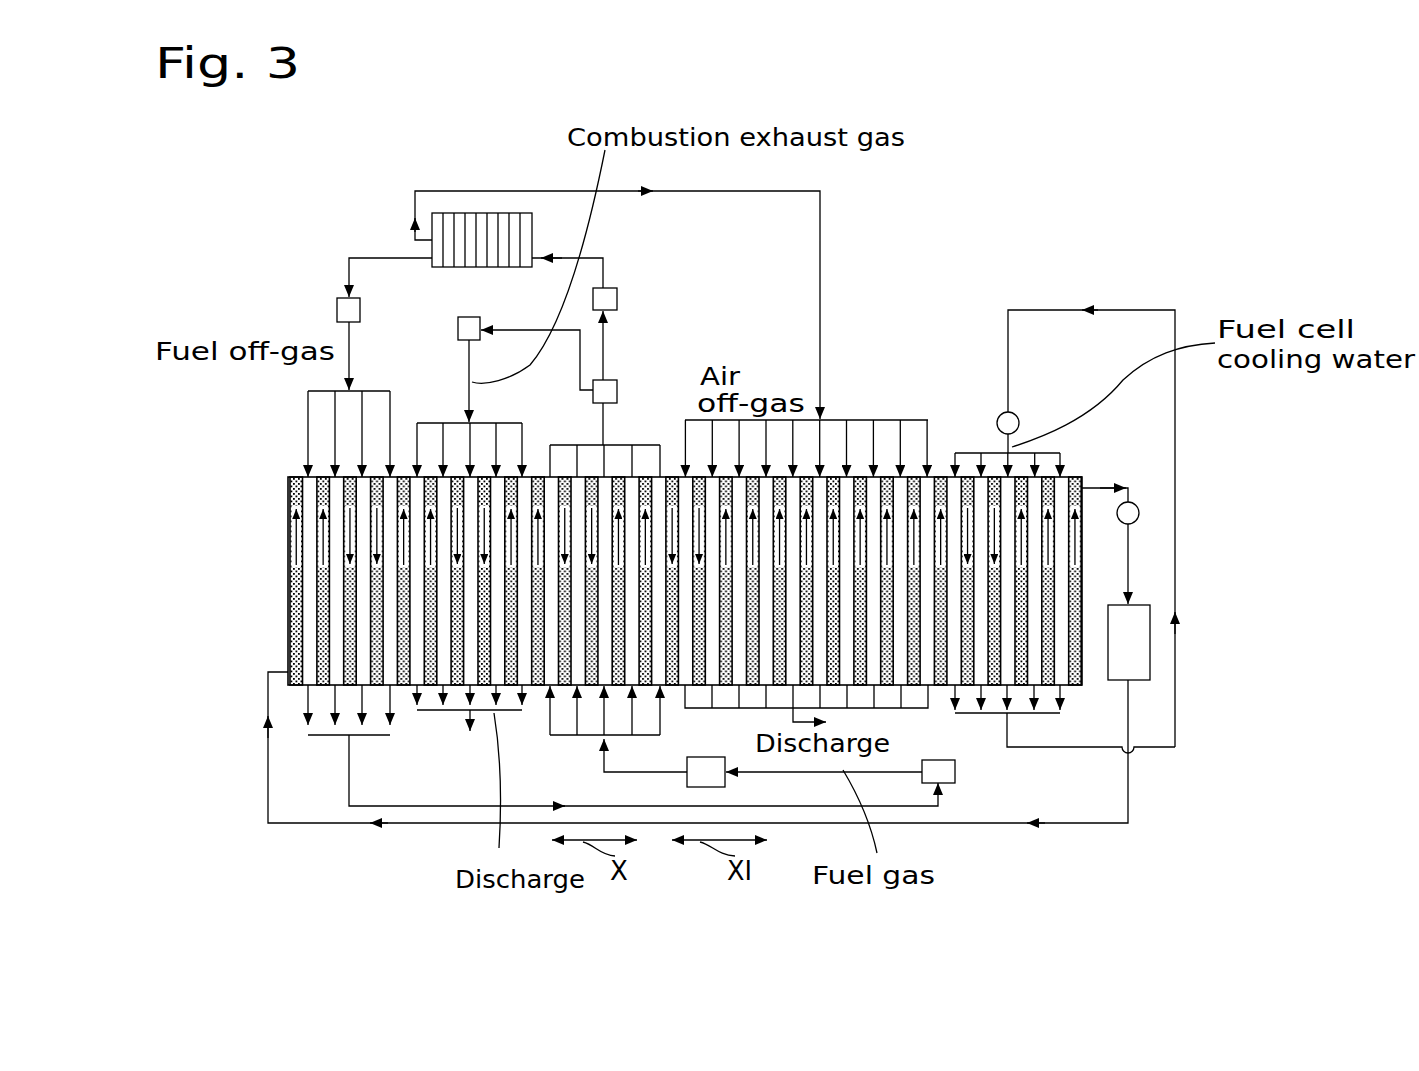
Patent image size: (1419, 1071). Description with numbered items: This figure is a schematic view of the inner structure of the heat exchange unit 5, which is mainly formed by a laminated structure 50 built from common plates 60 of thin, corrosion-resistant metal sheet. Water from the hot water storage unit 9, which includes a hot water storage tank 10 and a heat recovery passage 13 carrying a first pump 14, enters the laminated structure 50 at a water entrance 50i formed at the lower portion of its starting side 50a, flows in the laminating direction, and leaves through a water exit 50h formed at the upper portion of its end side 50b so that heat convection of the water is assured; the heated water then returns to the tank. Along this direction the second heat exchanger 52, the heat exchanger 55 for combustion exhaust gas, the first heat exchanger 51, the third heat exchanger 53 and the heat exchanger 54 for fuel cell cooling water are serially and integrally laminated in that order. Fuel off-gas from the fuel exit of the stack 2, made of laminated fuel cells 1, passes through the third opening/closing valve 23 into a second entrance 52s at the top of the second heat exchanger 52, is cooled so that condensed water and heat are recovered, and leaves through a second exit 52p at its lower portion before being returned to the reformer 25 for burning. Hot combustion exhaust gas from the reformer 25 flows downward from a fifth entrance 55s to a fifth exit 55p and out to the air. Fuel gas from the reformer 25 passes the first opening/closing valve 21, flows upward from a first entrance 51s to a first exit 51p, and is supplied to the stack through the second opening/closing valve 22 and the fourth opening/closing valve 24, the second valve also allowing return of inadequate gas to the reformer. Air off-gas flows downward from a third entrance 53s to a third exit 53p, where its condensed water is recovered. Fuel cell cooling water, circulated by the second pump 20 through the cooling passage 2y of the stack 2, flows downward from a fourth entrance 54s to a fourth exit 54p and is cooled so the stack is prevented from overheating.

The fuel cell 1 is at (437, 267).
The stack 2 is at (490, 267).
The heat exchange unit 5 is at (268, 502).
The hot water storage unit 9 is at (1138, 667).
The hot water storage tank 10 is at (1145, 637).
The heat recovery passage 13 is at (418, 824).
The first pump 14 is at (1177, 510).
The second pump 20 is at (1012, 412).
The first opening/closing valve 21 is at (728, 787).
The second opening/closing valve 22 is at (608, 380).
The third opening/closing valve 23 is at (360, 310).
The fourth opening/closing valve 24 is at (617, 299).
The reformer 25 is at (481, 328).
The cooling passage 2y is at (1108, 310).
The laminated structure 50 is at (288, 545).
The starting side 50a is at (290, 598).
The end side 50b is at (1082, 580).
The water exit 50h is at (1086, 486).
The water entrance 50i is at (283, 672).
The first heat exchanger 51 is at (655, 443).
The first exit 51p is at (577, 470).
The first entrance 51s is at (553, 690).
The second heat exchanger 52 is at (308, 393).
The second exit 52p is at (303, 688).
The second entrance 52s is at (368, 477).
The third heat exchanger 53 is at (912, 418).
The third exit 53p is at (753, 707).
The third entrance 53s is at (742, 478).
The heat exchanger for the fuel cell cooling water 54 is at (973, 450).
The fourth exit 54p is at (1063, 693).
The fourth entrance 54s is at (953, 478).
The heat exchanger for combustion exhaust gas 55 is at (437, 420).
The fifth exit 55p is at (407, 692).
The fifth entrance 55s is at (445, 480).
The common plate 60 is at (680, 553).